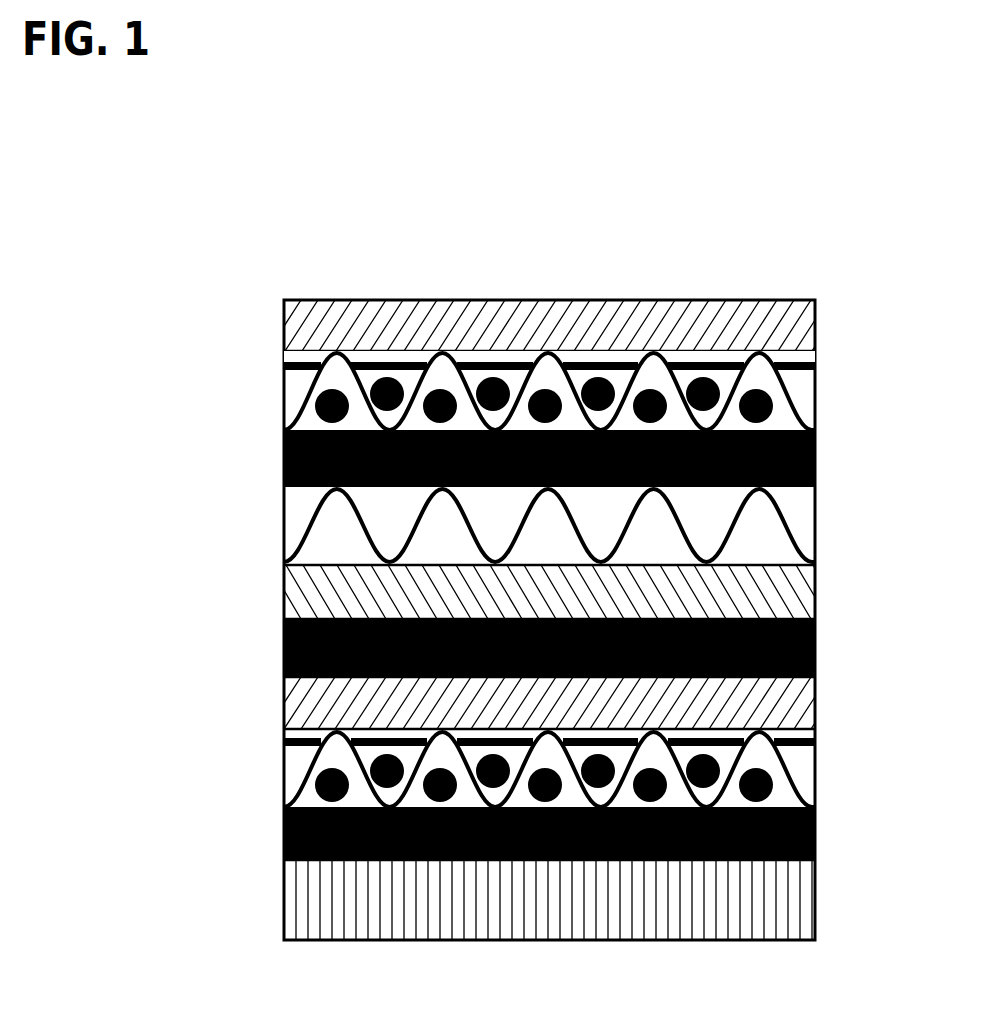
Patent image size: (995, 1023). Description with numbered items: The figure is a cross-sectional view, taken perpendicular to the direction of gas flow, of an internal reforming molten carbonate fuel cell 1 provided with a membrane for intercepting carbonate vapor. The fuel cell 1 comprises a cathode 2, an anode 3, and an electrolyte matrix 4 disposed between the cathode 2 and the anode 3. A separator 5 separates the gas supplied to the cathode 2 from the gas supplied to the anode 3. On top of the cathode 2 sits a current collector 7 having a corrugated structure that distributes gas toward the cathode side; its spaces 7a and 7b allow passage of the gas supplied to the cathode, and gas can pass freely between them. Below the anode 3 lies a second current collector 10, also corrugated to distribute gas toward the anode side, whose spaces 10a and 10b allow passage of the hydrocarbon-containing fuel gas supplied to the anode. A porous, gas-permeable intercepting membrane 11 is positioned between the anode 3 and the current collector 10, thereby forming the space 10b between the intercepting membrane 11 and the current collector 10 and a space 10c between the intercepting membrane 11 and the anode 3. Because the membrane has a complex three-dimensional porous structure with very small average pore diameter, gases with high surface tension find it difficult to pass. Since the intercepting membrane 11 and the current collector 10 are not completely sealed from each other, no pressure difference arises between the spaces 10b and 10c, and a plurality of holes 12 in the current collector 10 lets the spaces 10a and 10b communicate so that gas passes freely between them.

The fuel cell 1 is at (726, 248).
The cathode 2 is at (805, 588).
The anode 3 is at (803, 317).
The electrolyte matrix 4 is at (815, 637).
The separator 5 is at (815, 456).
The current collector 7 is at (531, 562).
The space 7a is at (380, 507).
The space 7b is at (332, 538).
The current collector 10 is at (552, 496).
The space 10a is at (428, 373).
The space 10b is at (586, 360).
The space 10c is at (677, 357).
The intercepting membrane 11 is at (617, 378).
The holes 12 is at (380, 385).